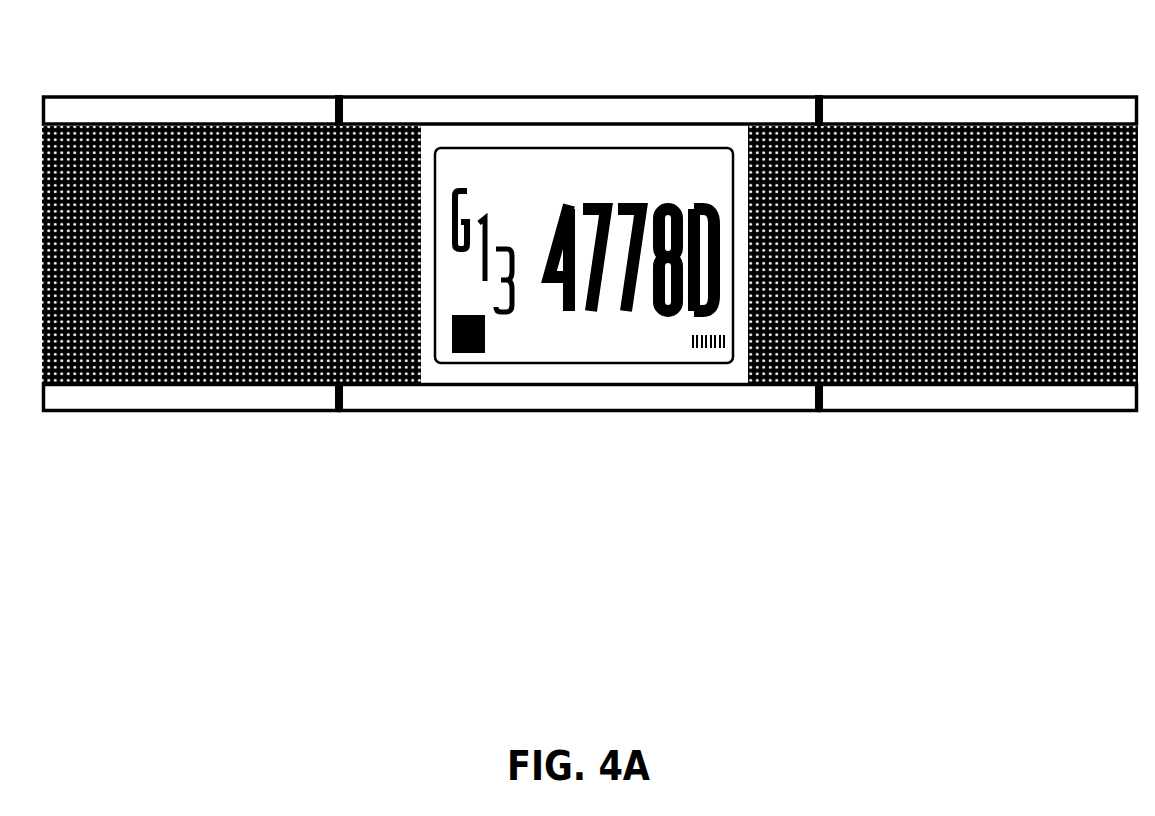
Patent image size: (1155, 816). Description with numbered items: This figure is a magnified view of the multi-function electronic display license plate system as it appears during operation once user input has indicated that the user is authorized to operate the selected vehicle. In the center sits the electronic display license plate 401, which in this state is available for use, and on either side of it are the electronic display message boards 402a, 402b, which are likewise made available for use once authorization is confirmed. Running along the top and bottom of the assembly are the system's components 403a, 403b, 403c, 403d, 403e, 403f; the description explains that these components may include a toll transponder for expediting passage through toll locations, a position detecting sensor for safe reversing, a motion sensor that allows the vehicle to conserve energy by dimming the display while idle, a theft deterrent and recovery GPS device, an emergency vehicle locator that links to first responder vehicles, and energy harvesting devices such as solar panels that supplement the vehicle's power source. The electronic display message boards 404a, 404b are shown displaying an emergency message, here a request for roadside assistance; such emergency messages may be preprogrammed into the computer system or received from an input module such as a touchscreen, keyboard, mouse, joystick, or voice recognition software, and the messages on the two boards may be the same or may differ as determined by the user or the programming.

The electronic display license plate 401 is at (590, 157).
The electronic display message board 402a is at (77, 355).
The electronic display message board 402b is at (1118, 385).
The component 403a is at (171, 108).
The component 403b is at (405, 108).
The component 403c is at (882, 110).
The component 403d is at (194, 403).
The component 403e is at (691, 405).
The component 403f is at (908, 397).
The electronic display message board 404a is at (298, 330).
The electronic display message board 404b is at (868, 295).